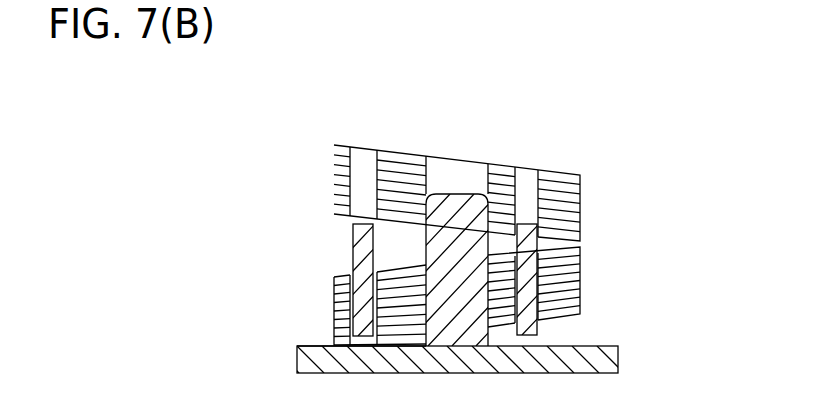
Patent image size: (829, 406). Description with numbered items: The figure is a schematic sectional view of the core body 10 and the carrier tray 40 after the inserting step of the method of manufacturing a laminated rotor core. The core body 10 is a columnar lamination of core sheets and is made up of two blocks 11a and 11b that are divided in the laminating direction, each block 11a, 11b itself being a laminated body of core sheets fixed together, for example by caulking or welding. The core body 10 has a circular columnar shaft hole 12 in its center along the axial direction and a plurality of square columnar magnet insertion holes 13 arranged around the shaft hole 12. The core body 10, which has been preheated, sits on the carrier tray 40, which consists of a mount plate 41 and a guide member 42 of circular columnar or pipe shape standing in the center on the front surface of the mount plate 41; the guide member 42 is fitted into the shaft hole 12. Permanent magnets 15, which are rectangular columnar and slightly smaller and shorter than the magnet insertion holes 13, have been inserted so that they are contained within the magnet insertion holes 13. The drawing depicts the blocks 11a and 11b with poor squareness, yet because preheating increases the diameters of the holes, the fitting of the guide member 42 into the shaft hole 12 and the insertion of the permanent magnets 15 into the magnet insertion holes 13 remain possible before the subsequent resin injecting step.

The core body 10 is at (475, 204).
The block 11a is at (581, 206).
The block 11b is at (580, 277).
The shaft hole 12 is at (455, 166).
The magnet insertion hole 13 is at (360, 156).
The permanent magnet 15 is at (352, 243).
The guide member 42 is at (467, 194).
The carrier tray 40 is at (627, 359).
The mount plate 41 is at (296, 356).